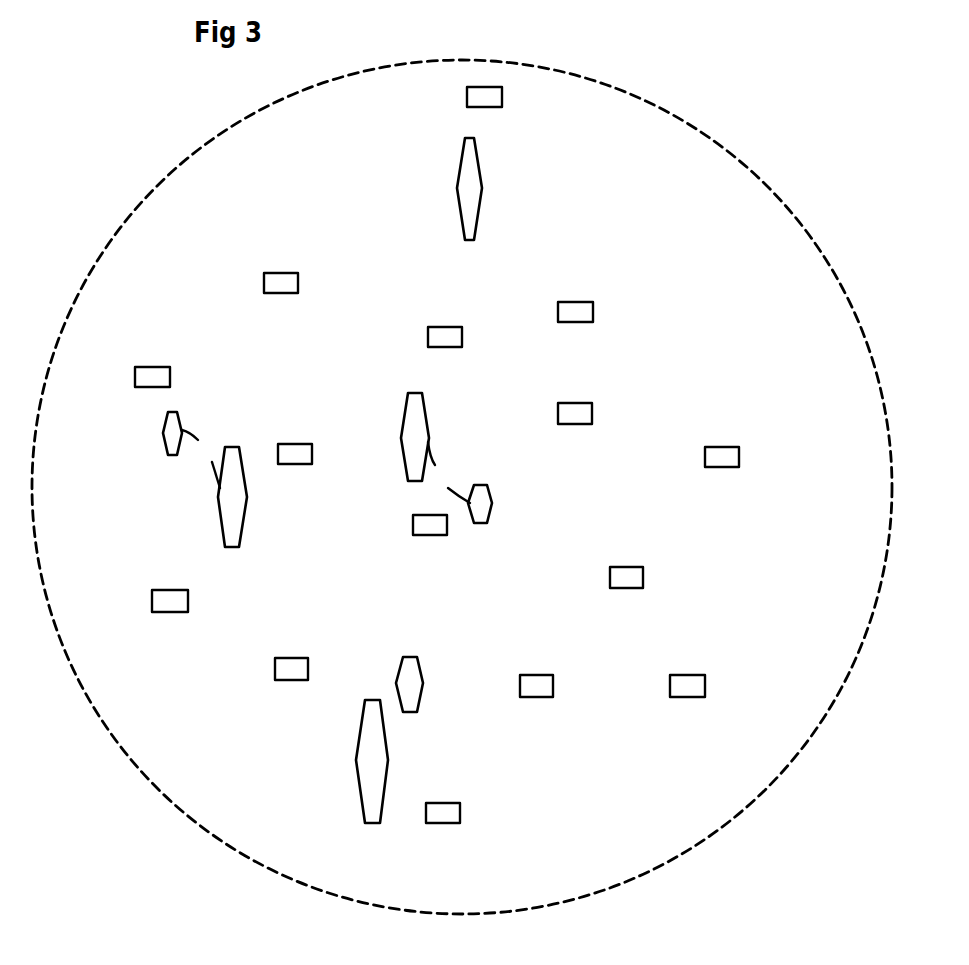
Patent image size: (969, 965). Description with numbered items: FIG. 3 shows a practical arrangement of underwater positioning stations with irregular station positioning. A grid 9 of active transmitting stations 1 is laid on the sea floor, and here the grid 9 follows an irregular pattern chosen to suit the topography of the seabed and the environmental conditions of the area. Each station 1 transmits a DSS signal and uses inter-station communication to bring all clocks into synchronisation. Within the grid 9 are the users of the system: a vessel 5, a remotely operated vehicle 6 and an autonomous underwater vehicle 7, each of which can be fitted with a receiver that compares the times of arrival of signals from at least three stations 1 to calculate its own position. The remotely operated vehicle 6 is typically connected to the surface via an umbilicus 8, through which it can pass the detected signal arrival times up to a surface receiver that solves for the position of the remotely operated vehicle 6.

The transmitting station 1 is at (437, 455).
The vessel 5 is at (350, 480).
The remotely operated vehicle 6 is at (327, 467).
The autonomous underwater vehicle 7 is at (409, 684).
The umbilicus 8 is at (326, 466).
The grid 9 is at (663, 865).